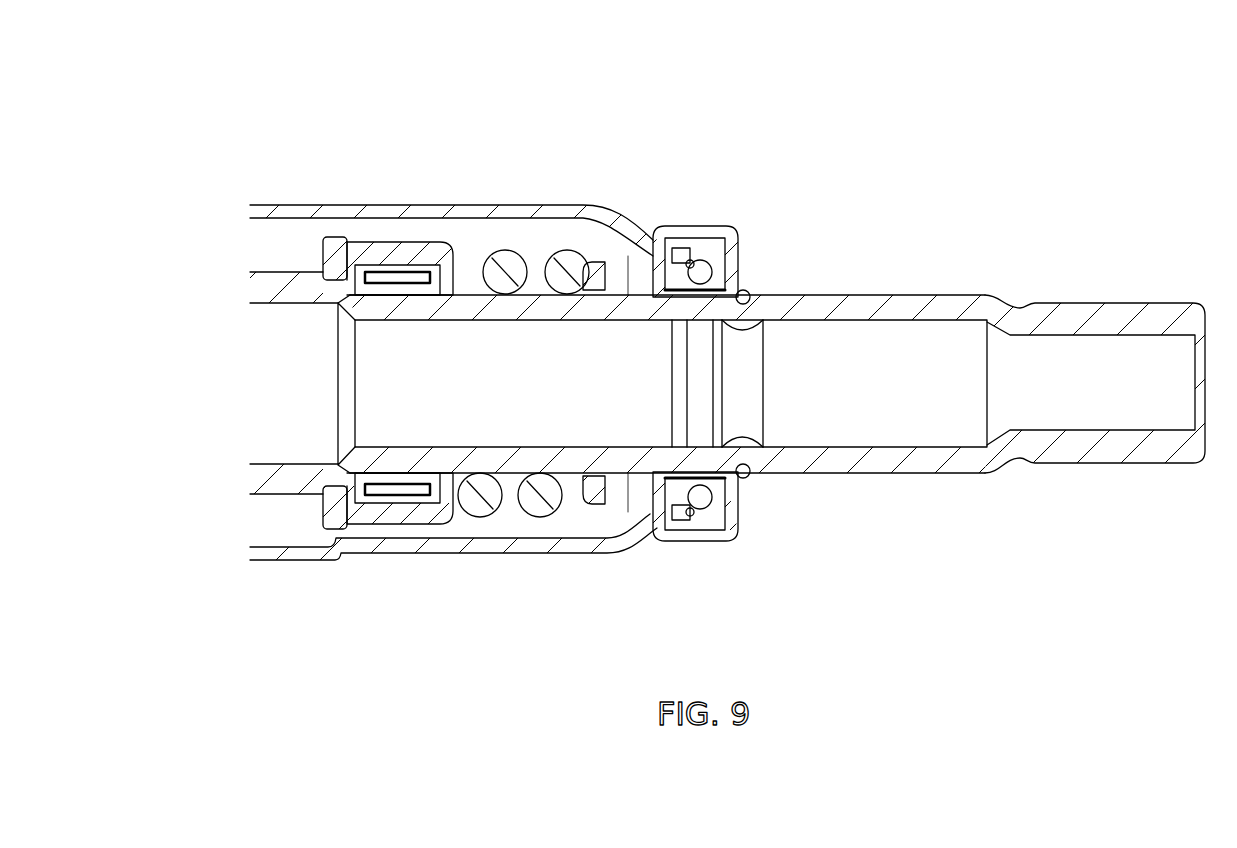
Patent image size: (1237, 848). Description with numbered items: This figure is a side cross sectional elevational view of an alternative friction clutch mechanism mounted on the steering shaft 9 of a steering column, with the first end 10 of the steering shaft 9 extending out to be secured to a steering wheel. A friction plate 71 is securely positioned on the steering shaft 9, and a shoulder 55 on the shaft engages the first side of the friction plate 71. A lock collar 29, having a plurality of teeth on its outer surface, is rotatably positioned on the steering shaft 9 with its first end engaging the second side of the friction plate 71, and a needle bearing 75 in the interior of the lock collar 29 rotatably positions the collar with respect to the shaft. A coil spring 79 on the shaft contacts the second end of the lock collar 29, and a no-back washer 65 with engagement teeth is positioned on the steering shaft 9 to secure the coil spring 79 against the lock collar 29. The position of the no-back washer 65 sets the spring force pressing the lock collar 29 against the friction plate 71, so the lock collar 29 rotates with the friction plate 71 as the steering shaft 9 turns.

The shoulder 55 is at (320, 277).
The needle bearing 75 is at (338, 303).
The friction plate 71 is at (338, 247).
The lock collar 29 is at (435, 242).
The coil spring 79 is at (571, 262).
The no-back washer 65 is at (598, 262).
The steering shaft 9 is at (863, 295).
The first end 10 is at (1107, 303).